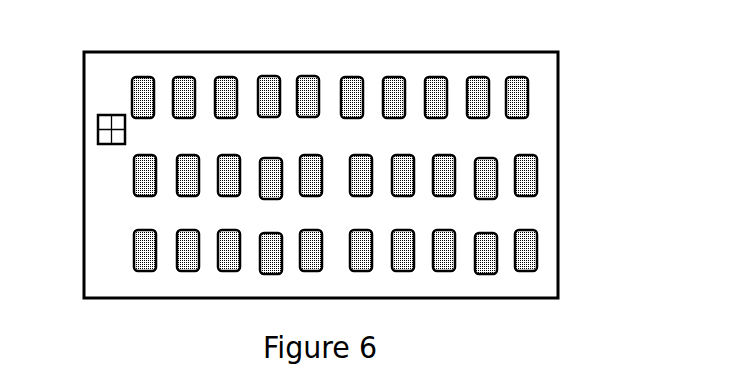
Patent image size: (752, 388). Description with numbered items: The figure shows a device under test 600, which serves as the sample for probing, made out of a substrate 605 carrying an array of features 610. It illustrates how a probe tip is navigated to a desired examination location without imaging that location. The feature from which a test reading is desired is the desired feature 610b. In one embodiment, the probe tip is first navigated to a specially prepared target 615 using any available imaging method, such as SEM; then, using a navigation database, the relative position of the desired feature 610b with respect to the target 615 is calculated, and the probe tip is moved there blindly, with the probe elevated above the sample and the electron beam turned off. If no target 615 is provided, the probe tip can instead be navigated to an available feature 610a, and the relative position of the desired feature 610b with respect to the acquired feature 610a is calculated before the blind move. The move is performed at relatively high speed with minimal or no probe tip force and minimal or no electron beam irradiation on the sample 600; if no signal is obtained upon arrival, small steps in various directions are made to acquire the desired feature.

The device under test 600 is at (330, 156).
The substrate 605 is at (540, 67).
The features 610 is at (303, 144).
The feature 610a is at (143, 77).
The desired feature 610b is at (228, 77).
The target 615 is at (100, 115).